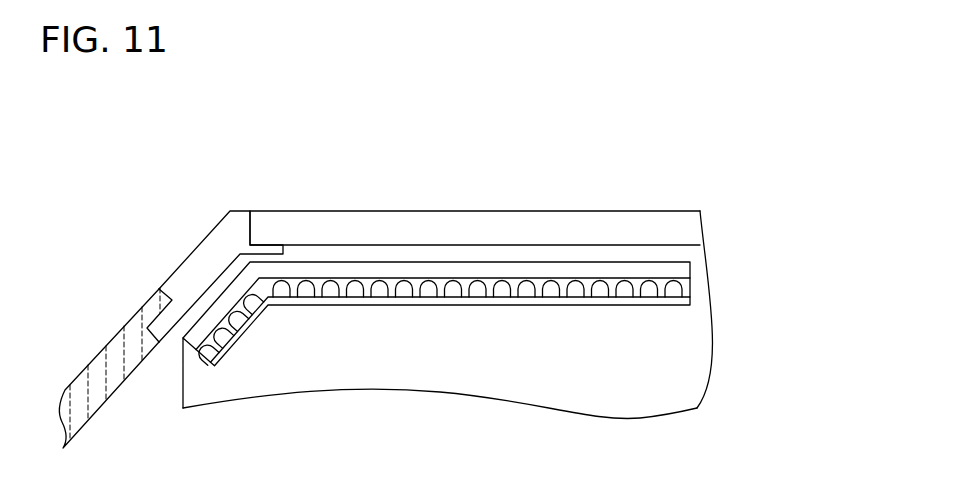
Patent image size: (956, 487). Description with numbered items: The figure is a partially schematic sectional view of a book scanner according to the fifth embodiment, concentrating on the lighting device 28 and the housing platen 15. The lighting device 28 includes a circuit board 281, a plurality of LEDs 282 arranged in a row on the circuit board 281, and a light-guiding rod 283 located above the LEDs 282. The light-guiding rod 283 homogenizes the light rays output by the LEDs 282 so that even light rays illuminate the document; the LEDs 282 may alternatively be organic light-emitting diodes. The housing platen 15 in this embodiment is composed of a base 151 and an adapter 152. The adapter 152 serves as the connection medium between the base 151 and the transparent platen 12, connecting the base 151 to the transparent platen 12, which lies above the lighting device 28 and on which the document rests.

The transparent platen 12 is at (548, 228).
The housing platen 15 is at (72, 210).
The base 151 is at (151, 302).
The adapter 152 is at (207, 236).
The lighting device 28 is at (805, 225).
The circuit board 281 is at (690, 303).
The LEDs 282 is at (678, 289).
The light-guiding rod 283 is at (680, 268).